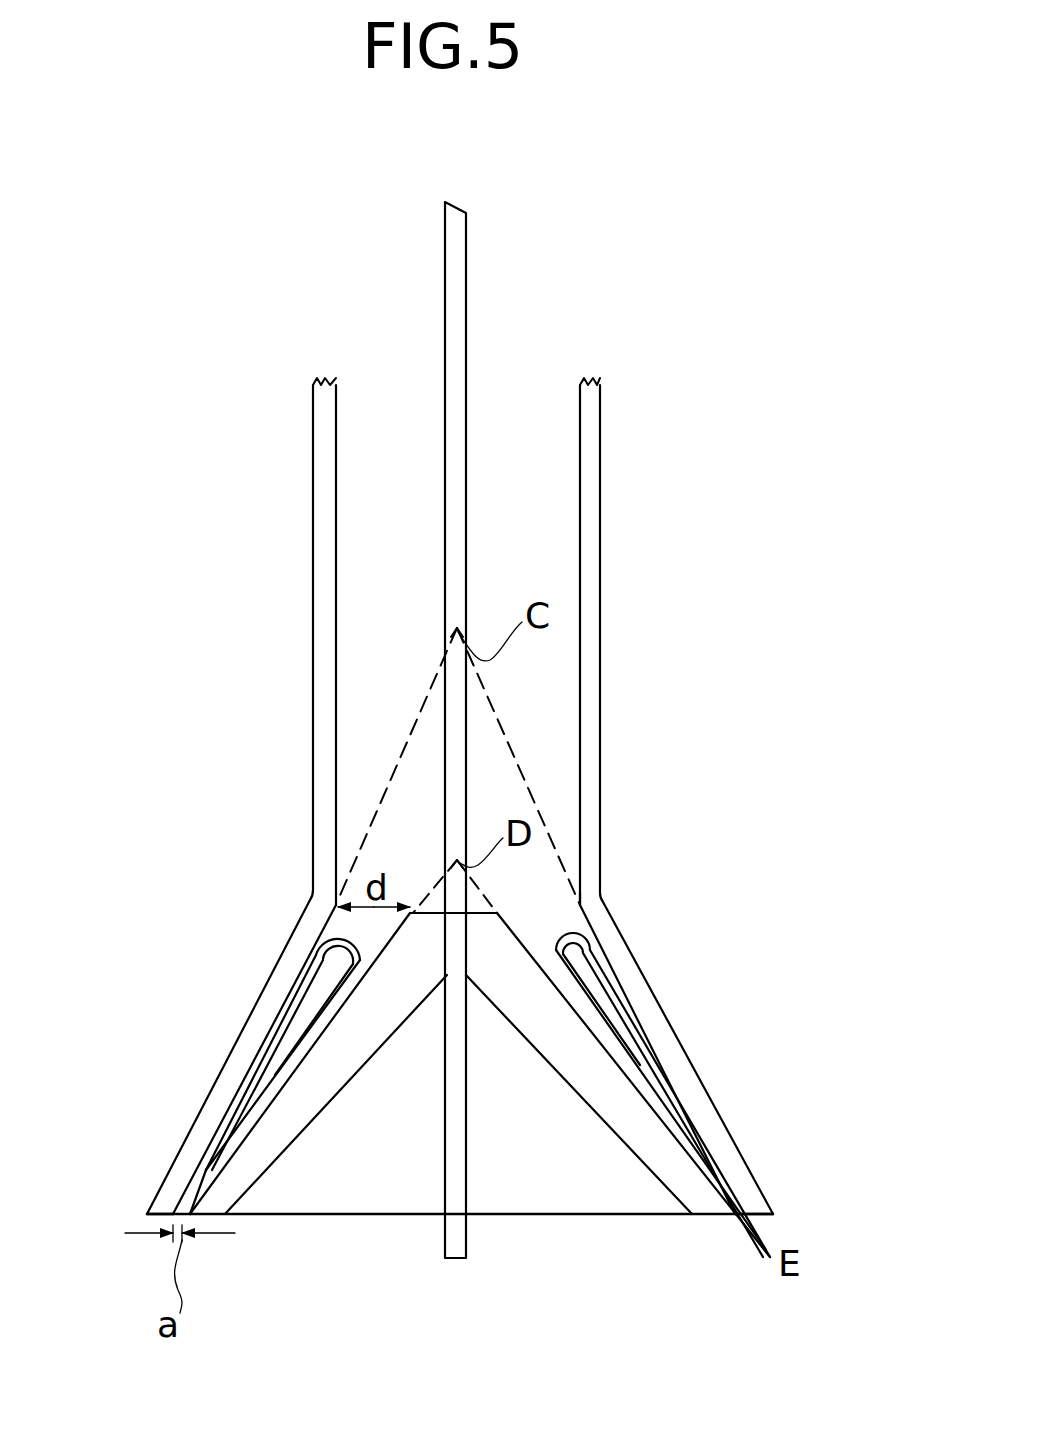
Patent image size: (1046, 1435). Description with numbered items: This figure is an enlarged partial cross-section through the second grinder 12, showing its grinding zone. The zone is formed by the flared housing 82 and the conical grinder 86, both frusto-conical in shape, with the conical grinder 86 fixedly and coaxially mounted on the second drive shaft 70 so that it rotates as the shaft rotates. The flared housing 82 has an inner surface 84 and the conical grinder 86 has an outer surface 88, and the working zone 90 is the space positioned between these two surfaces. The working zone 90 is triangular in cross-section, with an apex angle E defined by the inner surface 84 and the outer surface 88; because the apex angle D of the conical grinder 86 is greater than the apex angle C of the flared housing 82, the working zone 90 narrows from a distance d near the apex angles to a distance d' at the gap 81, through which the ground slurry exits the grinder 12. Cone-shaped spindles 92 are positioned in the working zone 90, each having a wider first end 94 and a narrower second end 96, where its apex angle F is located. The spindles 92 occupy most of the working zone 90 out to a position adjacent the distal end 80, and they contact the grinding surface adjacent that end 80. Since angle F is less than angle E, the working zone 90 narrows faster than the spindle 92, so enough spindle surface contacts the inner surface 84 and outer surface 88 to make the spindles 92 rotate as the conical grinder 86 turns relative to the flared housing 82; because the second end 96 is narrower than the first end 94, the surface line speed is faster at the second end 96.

The second grinder 12 is at (600, 752).
The second drive shaft 70 is at (466, 380).
The distal end 80 is at (790, 1214).
The gap 81 is at (187, 1240).
The flared housing 82 is at (710, 1100).
The inner surface 84 is at (187, 1192).
The conical grinder 86 is at (672, 1150).
The outer surface 88 is at (545, 955).
The working zone 90 is at (540, 905).
The spindles 92 is at (473, 1075).
The first end 94 is at (340, 950).
The second end 96 is at (198, 1160).